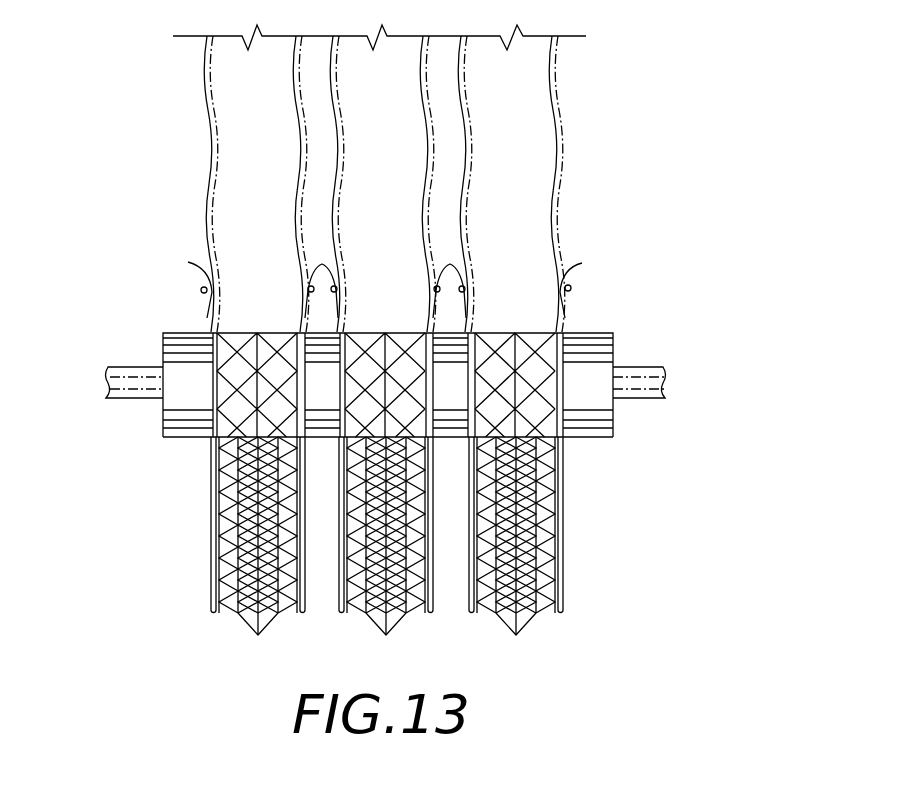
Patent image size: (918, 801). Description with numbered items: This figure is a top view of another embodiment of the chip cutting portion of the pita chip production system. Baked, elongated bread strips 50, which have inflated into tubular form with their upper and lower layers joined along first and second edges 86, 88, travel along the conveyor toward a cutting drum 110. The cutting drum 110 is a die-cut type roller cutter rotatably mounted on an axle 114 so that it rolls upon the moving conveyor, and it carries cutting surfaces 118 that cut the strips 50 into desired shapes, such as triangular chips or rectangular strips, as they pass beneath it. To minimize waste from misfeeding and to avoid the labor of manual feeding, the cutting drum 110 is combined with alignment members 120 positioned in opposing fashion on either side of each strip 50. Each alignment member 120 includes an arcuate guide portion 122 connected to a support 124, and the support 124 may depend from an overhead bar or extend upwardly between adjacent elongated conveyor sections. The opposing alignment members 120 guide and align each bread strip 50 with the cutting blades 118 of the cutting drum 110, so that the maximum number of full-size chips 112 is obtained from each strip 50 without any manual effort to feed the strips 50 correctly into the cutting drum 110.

The elongated dough strips 50 is at (272, 164).
The first edge 86 is at (461, 106).
The second edge 88 is at (425, 103).
The cutting drum 110 is at (592, 333).
The full-size chips 112 is at (217, 555).
The axle 114 is at (583, 438).
The cutting surfaces 118 is at (238, 398).
The alignment members 120 is at (465, 258).
The arcuate guide portion 122 is at (433, 272).
The support 124 is at (436, 314).